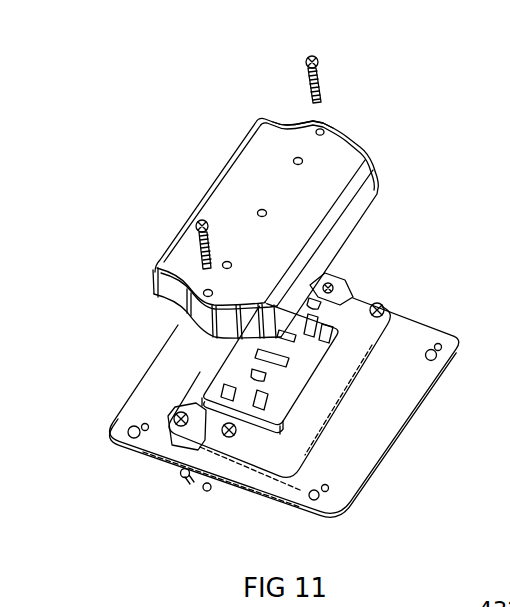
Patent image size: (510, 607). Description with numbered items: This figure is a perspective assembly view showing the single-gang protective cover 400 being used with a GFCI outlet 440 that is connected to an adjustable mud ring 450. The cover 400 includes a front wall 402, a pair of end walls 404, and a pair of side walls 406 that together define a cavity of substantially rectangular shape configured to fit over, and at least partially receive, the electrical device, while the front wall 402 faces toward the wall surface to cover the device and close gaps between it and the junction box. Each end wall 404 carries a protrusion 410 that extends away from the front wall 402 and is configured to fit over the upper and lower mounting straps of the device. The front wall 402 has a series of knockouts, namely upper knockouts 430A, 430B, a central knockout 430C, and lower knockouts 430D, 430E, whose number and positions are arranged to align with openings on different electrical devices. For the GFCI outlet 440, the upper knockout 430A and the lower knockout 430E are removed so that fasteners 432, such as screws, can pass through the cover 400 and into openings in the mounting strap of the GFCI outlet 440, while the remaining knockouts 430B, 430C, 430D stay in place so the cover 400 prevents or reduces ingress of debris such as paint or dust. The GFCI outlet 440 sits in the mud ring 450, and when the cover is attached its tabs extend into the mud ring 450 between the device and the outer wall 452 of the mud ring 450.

The protective cover 400 is at (150, 47).
The front wall 402 is at (318, 187).
The end wall 404 is at (287, 121).
The side wall 406 is at (342, 225).
The protrusion 410 is at (317, 124).
The upper knockout 430A is at (334, 131).
The upper knockout 430B is at (296, 158).
The central knockout 430C is at (259, 210).
The lower knockout 430D is at (228, 262).
The lower knockout 430E is at (204, 290).
The fastener 432 is at (304, 71).
The GFCI outlet 440 is at (206, 389).
The adjustable mud ring 450 is at (166, 464).
The outer wall 452 is at (323, 422).